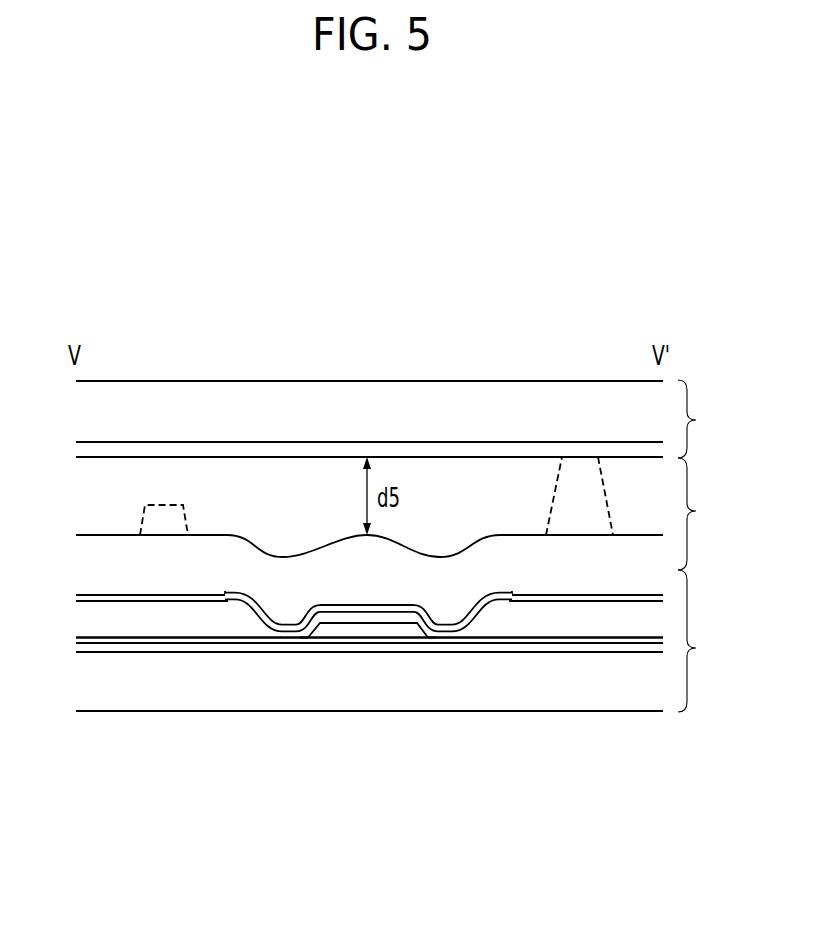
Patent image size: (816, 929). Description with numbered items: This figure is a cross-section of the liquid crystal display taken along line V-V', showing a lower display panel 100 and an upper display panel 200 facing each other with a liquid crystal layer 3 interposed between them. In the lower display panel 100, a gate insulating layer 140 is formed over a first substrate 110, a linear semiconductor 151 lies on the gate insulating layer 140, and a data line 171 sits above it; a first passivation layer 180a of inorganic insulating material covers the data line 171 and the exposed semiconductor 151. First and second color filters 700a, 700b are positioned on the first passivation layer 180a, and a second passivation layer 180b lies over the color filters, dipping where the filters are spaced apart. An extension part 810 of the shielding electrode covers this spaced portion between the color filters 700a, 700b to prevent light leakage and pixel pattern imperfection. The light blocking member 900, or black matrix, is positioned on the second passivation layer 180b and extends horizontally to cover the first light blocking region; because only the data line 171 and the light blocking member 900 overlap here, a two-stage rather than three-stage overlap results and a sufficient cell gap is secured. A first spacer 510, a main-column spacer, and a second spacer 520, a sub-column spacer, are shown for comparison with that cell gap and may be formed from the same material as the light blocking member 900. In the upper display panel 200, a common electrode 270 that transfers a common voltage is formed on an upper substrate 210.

The upper substrate 210 is at (88, 412).
The common electrode 270 is at (88, 449).
The upper display panel 200 is at (706, 419).
The liquid crystal layer 3 is at (696, 514).
The lower display panel 100 is at (706, 641).
The second spacer 520 is at (170, 497).
The first spacer 510 is at (553, 482).
The light blocking member 900 is at (88, 560).
The second passivation layer 180b is at (88, 597).
The first color filter 700a is at (88, 615).
The second color filter 700b is at (573, 622).
The extension part 810 is at (428, 605).
The data line 171 is at (332, 628).
The linear semiconductor 151 is at (397, 640).
The first passivation layer 180a is at (88, 638).
The gate insulating layer 140 is at (88, 652).
The first substrate 110 is at (88, 700).